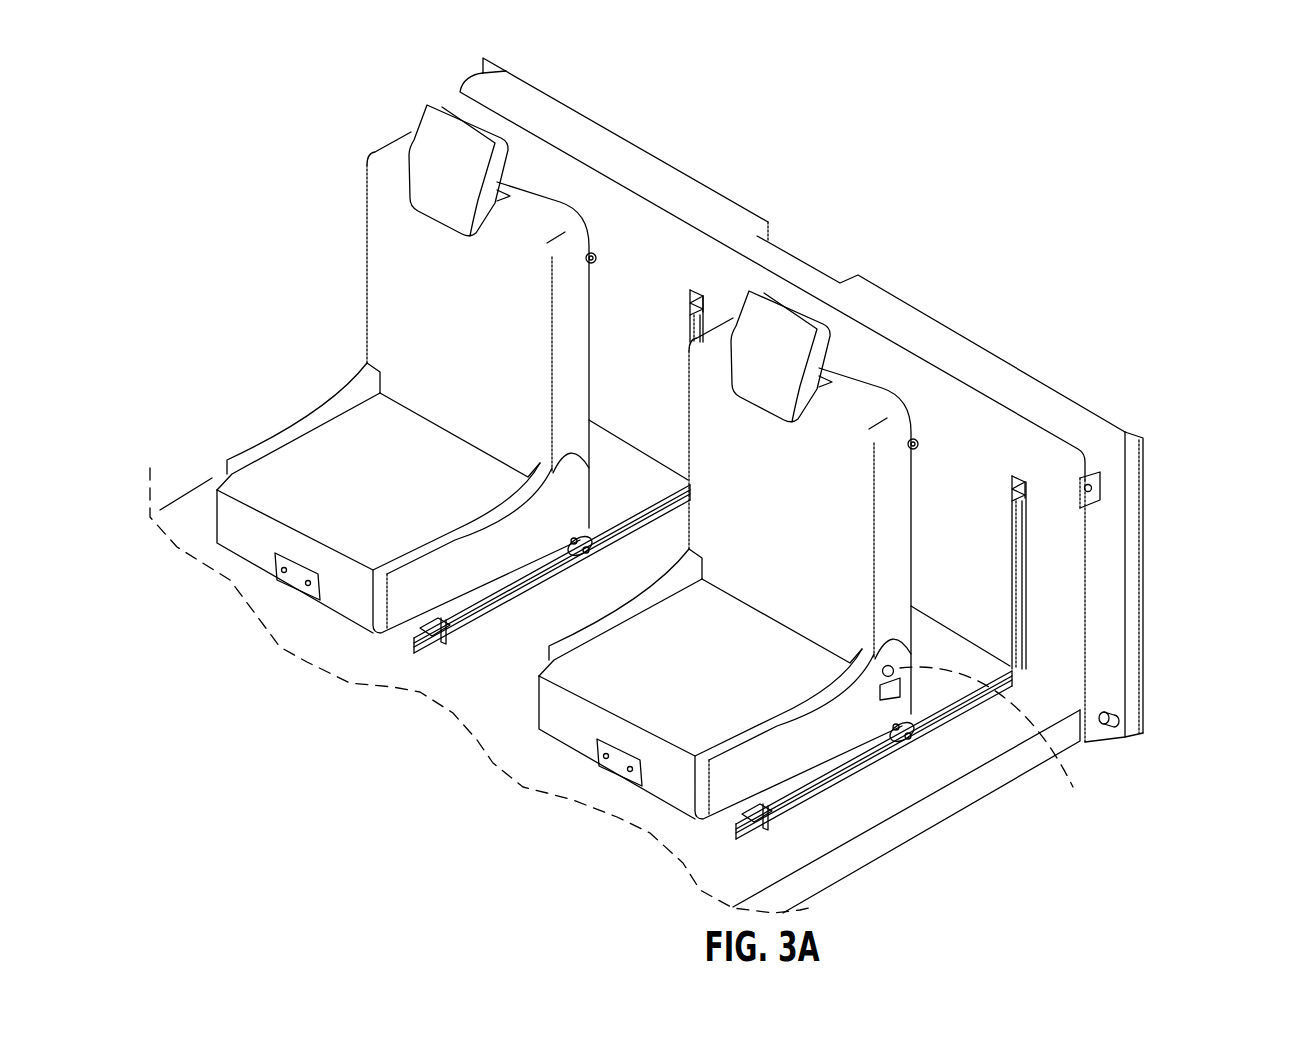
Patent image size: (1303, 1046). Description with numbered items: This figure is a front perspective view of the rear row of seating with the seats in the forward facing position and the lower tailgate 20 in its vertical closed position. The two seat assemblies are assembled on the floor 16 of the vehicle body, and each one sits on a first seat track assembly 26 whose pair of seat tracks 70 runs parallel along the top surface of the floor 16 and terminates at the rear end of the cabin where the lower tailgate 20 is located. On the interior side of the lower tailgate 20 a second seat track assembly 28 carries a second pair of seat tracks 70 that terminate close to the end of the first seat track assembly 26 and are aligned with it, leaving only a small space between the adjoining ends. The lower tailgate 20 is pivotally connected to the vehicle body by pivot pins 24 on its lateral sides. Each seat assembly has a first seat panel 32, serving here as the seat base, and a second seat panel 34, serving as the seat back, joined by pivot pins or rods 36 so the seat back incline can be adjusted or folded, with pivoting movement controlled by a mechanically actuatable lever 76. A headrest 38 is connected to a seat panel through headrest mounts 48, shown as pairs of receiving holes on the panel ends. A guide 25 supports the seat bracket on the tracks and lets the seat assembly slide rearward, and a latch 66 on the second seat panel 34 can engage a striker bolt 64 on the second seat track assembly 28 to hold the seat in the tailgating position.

The floor 16 is at (195, 507).
The lower tailgate 20 is at (1137, 435).
The pivot pin 24 is at (1108, 712).
The guide 25 is at (918, 744).
The first seat track assembly 26 is at (412, 641).
The second seat track assembly 28 is at (690, 312).
The first seat panel 32 is at (302, 503).
The second seat panel 34 is at (527, 277).
The pivot pins or rods 36 is at (1003, 742).
The headrest 38 is at (476, 153).
The headrest mounts 48 is at (307, 584).
The striker bolt 64 is at (698, 290).
The latch 66 is at (596, 258).
The seat tracks 70 is at (1025, 548).
The lever 76 is at (895, 692).